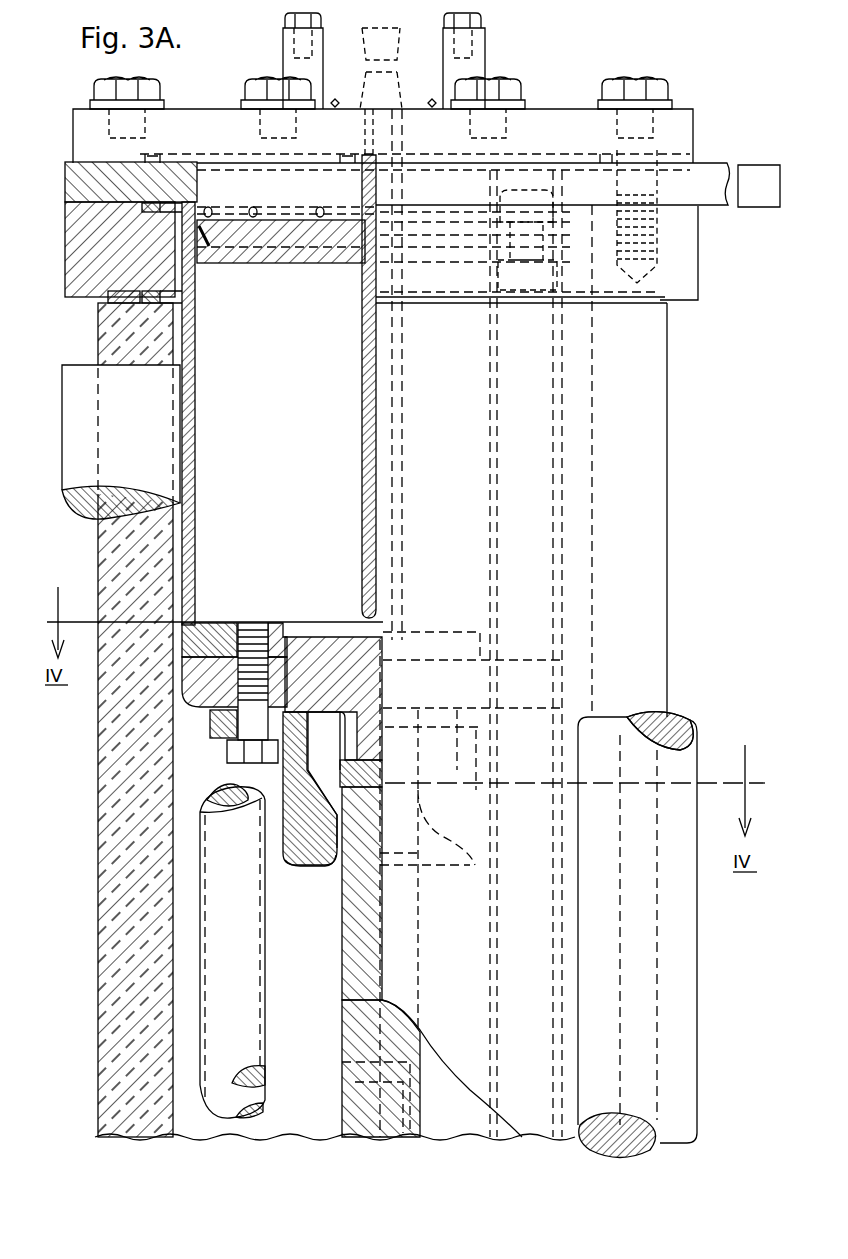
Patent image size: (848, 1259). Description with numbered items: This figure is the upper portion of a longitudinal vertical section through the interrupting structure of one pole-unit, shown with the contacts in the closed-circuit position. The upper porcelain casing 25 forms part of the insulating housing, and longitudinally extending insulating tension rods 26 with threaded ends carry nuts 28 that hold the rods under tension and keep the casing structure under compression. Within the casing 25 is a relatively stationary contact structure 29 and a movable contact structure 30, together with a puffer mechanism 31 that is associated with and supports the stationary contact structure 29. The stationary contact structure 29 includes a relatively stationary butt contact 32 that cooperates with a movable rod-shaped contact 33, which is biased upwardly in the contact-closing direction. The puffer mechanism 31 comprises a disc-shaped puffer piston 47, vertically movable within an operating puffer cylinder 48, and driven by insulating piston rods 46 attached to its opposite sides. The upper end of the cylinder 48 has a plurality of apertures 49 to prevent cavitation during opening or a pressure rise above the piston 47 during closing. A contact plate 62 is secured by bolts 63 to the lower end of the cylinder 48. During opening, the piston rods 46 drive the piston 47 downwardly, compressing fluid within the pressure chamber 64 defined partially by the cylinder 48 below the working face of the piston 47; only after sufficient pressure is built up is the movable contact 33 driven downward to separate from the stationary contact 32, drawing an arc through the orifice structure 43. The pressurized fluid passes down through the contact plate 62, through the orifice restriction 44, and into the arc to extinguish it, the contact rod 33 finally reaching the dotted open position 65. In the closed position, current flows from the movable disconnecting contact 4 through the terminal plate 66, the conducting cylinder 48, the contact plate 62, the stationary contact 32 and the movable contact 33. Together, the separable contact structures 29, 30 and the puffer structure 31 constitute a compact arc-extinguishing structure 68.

The movable disconnecting contact 4 is at (762, 198).
The upper porcelain casing 25 is at (113, 756).
The tension rods 26 is at (85, 422).
The nuts 28 is at (86, 181).
The relatively stationary contact structure 29 is at (335, 747).
The movable contact structure 30 is at (347, 1025).
The puffer mechanism 31 is at (192, 525).
The relatively stationary butt contact 32 is at (345, 768).
The movable rod-shaped contact 33 is at (342, 920).
The orifice structure 43 is at (283, 835).
The orifice restriction 44 is at (325, 857).
The insulating piston rods 46 is at (250, 1013).
The puffer piston 47 is at (303, 267).
The operating puffer cylinder 48 is at (195, 429).
The apertures 49 is at (256, 208).
The contact plate 62 is at (205, 710).
The bolts 63 is at (235, 752).
The pressure chamber 64 is at (292, 371).
The dotted open position 65 is at (343, 1072).
The terminal plate 66 is at (701, 181).
The arc-extinguishing structure 68 is at (309, 974).